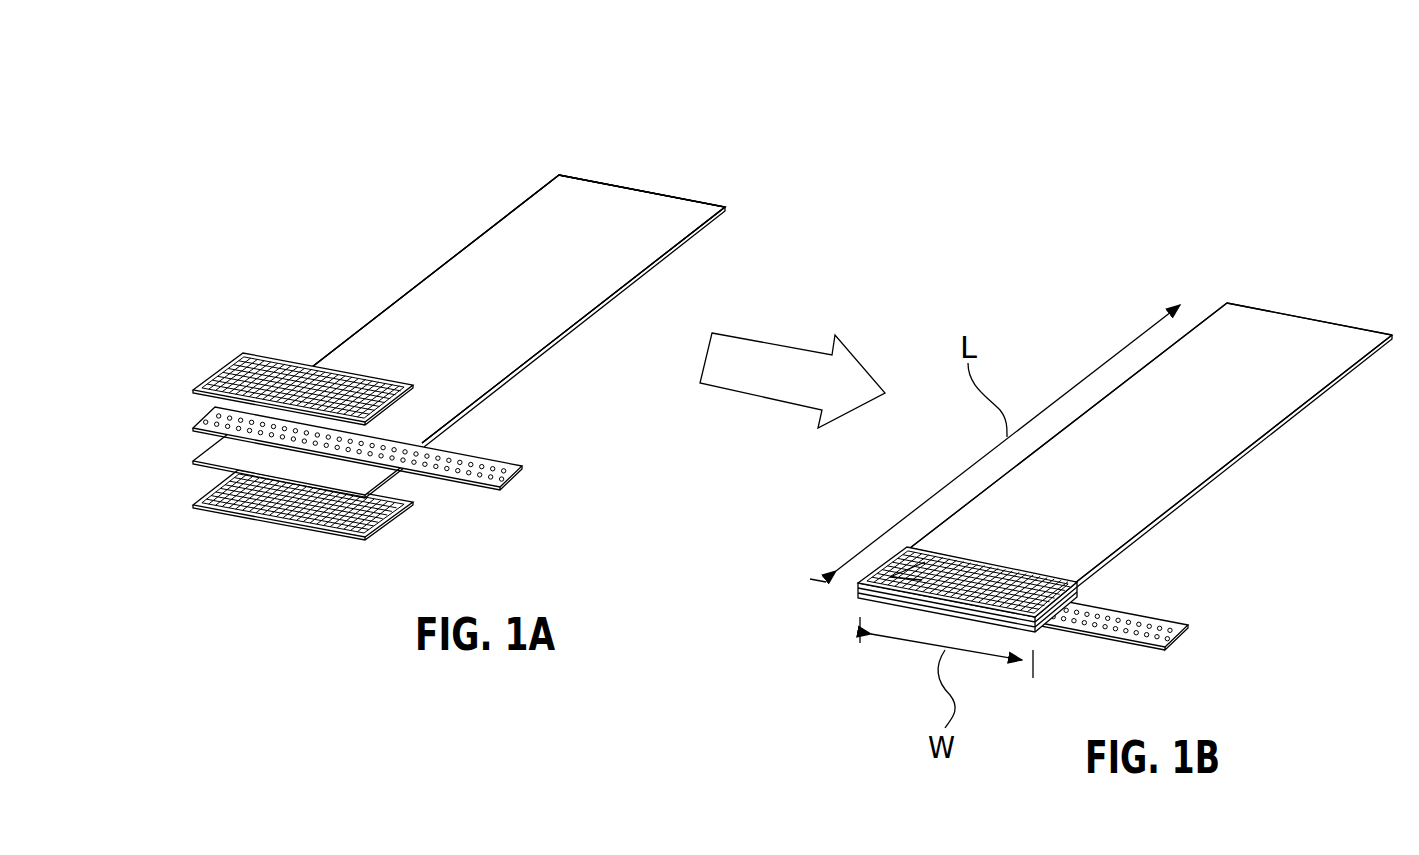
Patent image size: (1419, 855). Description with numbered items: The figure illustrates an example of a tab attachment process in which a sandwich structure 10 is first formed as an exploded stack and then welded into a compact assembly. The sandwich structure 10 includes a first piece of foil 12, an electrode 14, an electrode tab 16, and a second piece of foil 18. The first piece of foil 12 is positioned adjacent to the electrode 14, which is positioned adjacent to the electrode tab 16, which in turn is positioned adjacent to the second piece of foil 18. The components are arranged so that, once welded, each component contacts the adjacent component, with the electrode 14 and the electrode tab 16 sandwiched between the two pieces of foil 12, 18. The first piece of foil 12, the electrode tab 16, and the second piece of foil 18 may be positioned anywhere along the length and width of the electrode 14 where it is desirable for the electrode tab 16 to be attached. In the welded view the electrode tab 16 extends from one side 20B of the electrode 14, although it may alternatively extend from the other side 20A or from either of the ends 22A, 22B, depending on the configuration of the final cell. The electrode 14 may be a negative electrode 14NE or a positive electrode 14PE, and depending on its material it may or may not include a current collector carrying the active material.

In FIG. 1A, the sandwich structure 10 is at (419, 248).
In FIG. 1A, the first piece of foil 12 is at (398, 507).
In FIG. 1A, the electrode 14 is at (664, 223).
In FIG. 1B, the electrode 14 is at (1253, 383).
In FIG. 1A, the negative electrode 14NE is at (518, 309).
In FIG. 1A, the positive electrode 14PE is at (518, 309).
In FIG. 1A, the electrode tab 16 is at (477, 462).
In FIG. 1B, the electrode tab 16 is at (1157, 628).
In FIG. 1A, the second piece of foil 18 is at (253, 358).
In FIG. 1B, the second piece of foil 18 is at (858, 593).
In FIG. 1B, the other side of the electrode 20A is at (1215, 308).
In FIG. 1B, the one side of the electrode 20B is at (1228, 468).
In FIG. 1A, the end of the electrode 22A is at (593, 180).
In FIG. 1B, the end of the electrode 22A is at (1325, 322).
In FIG. 1A, the end of the electrode 22B is at (207, 466).